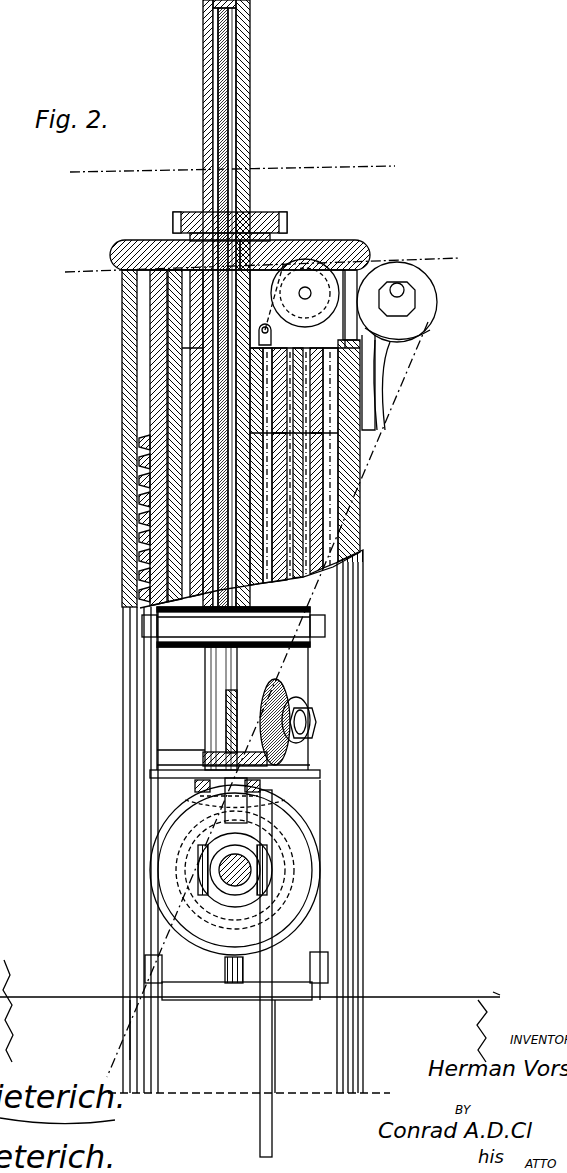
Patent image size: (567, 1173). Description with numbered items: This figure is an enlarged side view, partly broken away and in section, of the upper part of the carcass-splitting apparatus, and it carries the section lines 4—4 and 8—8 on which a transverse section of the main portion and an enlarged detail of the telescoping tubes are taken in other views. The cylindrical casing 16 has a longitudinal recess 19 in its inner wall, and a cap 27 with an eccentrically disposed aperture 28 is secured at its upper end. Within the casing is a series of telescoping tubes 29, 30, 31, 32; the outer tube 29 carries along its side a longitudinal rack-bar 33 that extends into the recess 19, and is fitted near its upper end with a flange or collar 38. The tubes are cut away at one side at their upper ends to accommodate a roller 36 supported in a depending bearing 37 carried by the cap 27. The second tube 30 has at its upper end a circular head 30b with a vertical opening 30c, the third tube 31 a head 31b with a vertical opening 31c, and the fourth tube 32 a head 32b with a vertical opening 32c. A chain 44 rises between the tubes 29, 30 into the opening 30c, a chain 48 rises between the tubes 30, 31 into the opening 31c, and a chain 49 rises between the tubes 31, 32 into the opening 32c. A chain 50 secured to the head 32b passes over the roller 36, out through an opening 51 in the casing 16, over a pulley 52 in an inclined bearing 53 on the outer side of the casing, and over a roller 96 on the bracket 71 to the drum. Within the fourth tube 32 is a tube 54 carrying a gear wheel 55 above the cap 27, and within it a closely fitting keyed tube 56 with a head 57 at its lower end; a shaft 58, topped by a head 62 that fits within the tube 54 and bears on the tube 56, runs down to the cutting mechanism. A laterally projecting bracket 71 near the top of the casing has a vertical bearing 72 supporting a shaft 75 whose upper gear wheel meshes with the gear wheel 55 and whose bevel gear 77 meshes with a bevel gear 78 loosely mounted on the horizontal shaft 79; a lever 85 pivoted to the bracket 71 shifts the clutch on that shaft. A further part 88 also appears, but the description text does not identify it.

The section line 4 is at (395, 166).
The section line 8 is at (460, 258).
The cylindrical casing 16 is at (362, 796).
The longitudinal recess 19 is at (142, 528).
The cap 27 is at (133, 231).
The eccentrically disposed aperture 28 is at (297, 305).
The outer tube 29 is at (290, 459).
The second tube 30 is at (296, 481).
The circular head 30b is at (323, 377).
The vertical opening 30c is at (365, 432).
The third tube 31 is at (300, 506).
The circular head 31b is at (290, 378).
The vertical opening 31c is at (312, 466).
The fourth tube 32 is at (340, 546).
The head 32b is at (305, 293).
The vertical opening 32c is at (352, 446).
The rack-bar 33 is at (146, 432).
The roller 36 is at (305, 293).
The depending bearing 37 is at (334, 243).
The flange or collar 38 is at (340, 441).
The chain 44 is at (322, 521).
The chain or cable 48 is at (330, 568).
The chain 49 is at (345, 590).
The chain 50 is at (375, 659).
The opening 51 is at (370, 272).
The second pulley 52 is at (412, 290).
The inclined bearing 53 is at (385, 352).
The tube 54 is at (243, 27).
The gear wheel 55 is at (286, 212).
The tube 56 is at (238, 62).
The head 57 is at (208, 140).
The shaft 58 is at (232, 132).
The head 62 is at (196, 2).
The bracket 71 is at (226, 716).
The vertical bearing 72 is at (208, 663).
The shaft 75 is at (245, 598).
The bevel gear 77 is at (198, 793).
The bevel gear 78 is at (165, 856).
The horizontal shaft 79 is at (230, 886).
The lever 85 is at (262, 1127).
The rod 88 is at (120, 1040).
The roller 96 is at (292, 691).